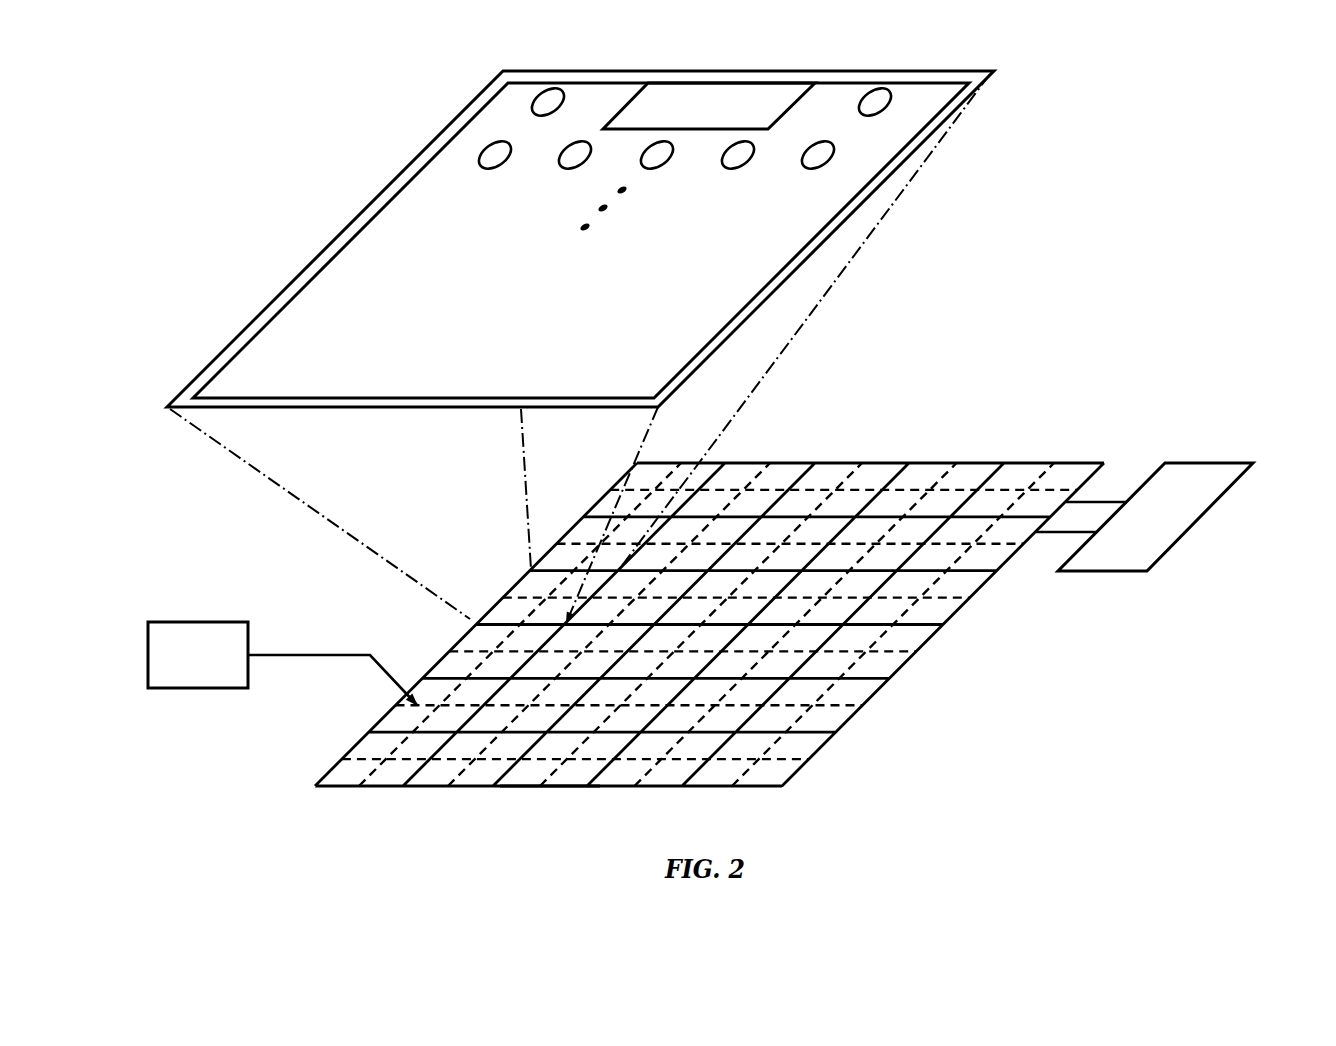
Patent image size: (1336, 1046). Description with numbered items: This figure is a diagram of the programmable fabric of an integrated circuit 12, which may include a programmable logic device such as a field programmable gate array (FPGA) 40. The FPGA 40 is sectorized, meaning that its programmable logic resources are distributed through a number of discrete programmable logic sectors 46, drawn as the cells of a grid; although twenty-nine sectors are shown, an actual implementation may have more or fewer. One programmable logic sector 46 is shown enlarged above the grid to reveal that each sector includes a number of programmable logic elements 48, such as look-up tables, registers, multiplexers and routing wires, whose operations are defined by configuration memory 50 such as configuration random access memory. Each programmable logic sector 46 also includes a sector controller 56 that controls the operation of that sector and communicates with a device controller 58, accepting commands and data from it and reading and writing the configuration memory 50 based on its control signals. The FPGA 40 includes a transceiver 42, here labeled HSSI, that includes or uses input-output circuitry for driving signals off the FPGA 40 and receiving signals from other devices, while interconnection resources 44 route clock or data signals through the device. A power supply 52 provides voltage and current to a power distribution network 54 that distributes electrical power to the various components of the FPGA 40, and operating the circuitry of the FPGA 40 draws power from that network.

The integrated circuit 12 is at (637, 419).
The field programmable gate array (FPGA) 40 is at (637, 419).
The transceiver 42 is at (1212, 462).
The interconnection resources 44 is at (367, 207).
The programmable logic sector 46 is at (450, 86).
The programmable logic element 48 is at (590, 141).
The configuration memory 50 is at (694, 138).
The power supply 52 is at (198, 621).
The power distribution network 54 is at (392, 746).
The sector controller 56 is at (718, 83).
The device controller 58 is at (549, 787).